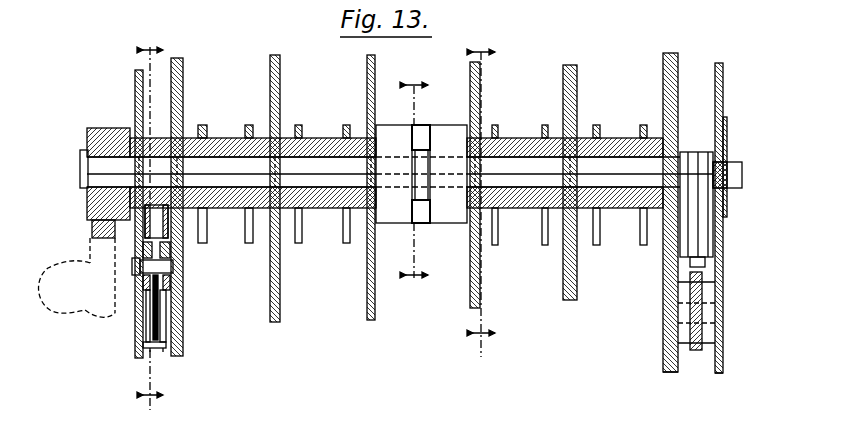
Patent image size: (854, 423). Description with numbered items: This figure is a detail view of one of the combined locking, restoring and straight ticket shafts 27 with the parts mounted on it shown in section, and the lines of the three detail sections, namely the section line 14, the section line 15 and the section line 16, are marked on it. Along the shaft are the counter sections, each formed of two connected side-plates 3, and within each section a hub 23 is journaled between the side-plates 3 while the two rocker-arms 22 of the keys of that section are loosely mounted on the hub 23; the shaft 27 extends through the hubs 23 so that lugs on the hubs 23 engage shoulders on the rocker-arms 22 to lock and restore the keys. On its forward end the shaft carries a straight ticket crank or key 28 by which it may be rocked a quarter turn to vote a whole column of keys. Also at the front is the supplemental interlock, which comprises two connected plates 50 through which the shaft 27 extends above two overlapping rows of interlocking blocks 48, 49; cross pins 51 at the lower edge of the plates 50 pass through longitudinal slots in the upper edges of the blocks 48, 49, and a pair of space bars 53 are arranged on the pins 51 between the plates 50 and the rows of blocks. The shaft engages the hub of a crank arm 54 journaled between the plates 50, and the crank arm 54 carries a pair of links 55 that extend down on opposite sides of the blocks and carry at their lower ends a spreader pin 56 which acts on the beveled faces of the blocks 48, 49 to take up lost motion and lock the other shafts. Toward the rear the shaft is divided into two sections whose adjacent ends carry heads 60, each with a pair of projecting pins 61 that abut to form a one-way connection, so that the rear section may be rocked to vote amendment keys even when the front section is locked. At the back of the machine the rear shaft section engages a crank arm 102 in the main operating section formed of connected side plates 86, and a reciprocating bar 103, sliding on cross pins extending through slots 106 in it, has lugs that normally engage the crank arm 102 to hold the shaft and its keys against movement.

The side-plates 3 is at (270, 297).
The section line 14- 14 is at (150, 226).
The section line 15- 15 is at (414, 181).
The section line 16- 16 is at (481, 196).
The rocker-arm 22 is at (238, 149).
The hub 23 is at (250, 125).
The locking and restoring shaft 27 is at (305, 166).
The straight ticket crank or key 28 is at (90, 232).
The interlocking block 48 is at (150, 350).
The interlocking block 49 is at (168, 347).
The plates 50 is at (170, 331).
The cross pin 51 is at (170, 268).
The space bar 53 is at (143, 255).
The crank arm 54 is at (158, 222).
The link 55 is at (162, 311).
The spreader pin 56 is at (163, 350).
The head 60 is at (386, 131).
The projecting pin 61 is at (427, 135).
The side plates 86 is at (718, 374).
The crank arm 102 is at (690, 226).
The reciprocating bar 103 is at (702, 286).
The slot 106 is at (710, 324).